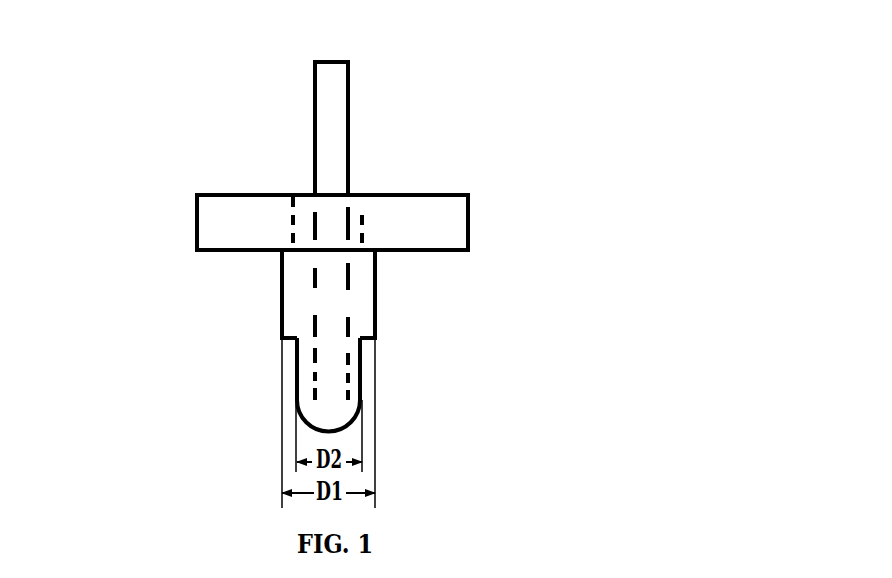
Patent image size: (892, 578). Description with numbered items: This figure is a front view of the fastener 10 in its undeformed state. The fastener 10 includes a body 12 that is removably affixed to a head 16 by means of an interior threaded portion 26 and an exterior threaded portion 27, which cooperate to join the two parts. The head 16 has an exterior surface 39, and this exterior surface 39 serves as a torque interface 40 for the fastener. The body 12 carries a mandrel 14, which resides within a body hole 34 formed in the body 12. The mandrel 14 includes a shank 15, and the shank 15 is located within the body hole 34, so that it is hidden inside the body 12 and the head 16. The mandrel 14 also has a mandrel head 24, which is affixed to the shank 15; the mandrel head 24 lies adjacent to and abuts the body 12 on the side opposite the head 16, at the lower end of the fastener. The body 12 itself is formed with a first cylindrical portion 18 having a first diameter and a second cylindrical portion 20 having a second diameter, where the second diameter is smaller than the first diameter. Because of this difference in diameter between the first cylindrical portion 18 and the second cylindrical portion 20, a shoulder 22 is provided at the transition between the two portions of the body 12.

The fastener 10 is at (452, 143).
The body 12 is at (300, 277).
The mandrel 14 is at (341, 237).
The shank 15 is at (332, 132).
The head 16 is at (307, 233).
The first cylindrical portion 18 is at (383, 339).
The second cylindrical portion 20 is at (363, 389).
The shoulder 22 is at (288, 342).
The mandrel head 24 is at (343, 410).
The interior threaded portion 26 is at (398, 129).
The exterior threaded portion 27 is at (361, 207).
The body hole 34 is at (352, 277).
The exterior surface 39 is at (256, 233).
The torque interface 40 is at (220, 225).